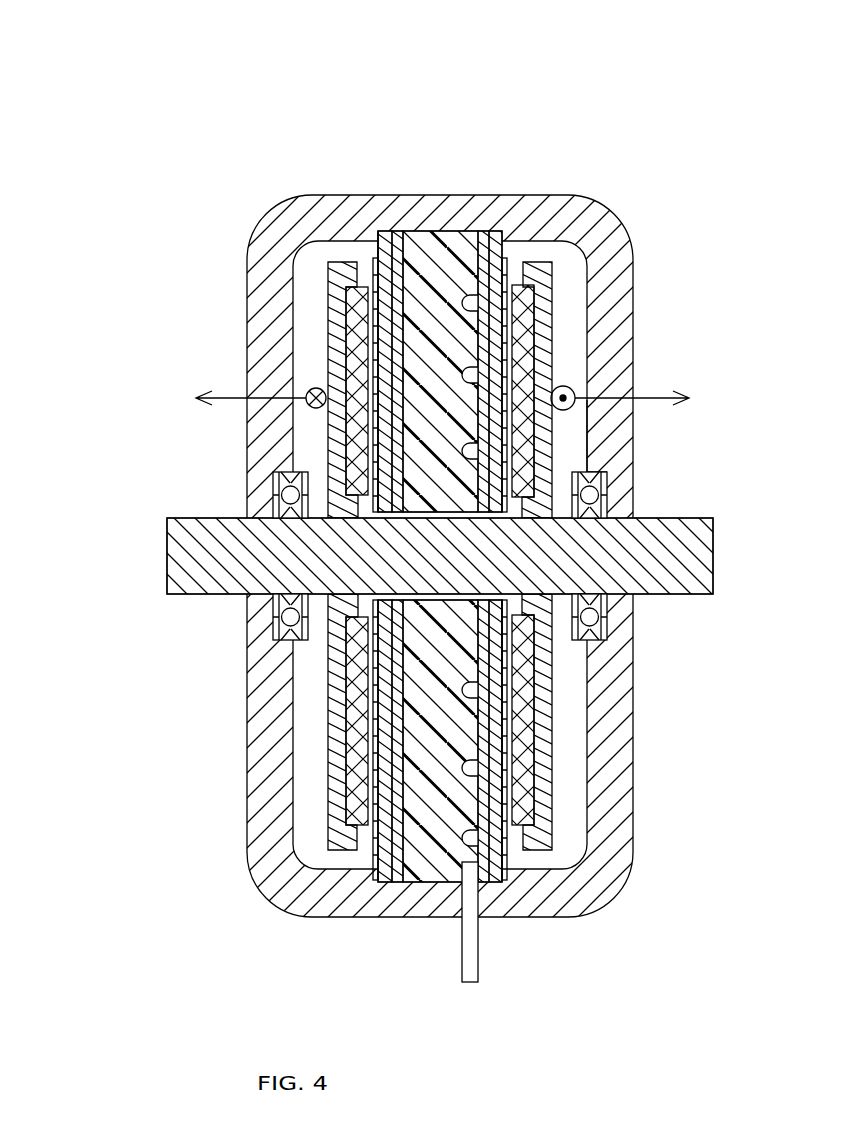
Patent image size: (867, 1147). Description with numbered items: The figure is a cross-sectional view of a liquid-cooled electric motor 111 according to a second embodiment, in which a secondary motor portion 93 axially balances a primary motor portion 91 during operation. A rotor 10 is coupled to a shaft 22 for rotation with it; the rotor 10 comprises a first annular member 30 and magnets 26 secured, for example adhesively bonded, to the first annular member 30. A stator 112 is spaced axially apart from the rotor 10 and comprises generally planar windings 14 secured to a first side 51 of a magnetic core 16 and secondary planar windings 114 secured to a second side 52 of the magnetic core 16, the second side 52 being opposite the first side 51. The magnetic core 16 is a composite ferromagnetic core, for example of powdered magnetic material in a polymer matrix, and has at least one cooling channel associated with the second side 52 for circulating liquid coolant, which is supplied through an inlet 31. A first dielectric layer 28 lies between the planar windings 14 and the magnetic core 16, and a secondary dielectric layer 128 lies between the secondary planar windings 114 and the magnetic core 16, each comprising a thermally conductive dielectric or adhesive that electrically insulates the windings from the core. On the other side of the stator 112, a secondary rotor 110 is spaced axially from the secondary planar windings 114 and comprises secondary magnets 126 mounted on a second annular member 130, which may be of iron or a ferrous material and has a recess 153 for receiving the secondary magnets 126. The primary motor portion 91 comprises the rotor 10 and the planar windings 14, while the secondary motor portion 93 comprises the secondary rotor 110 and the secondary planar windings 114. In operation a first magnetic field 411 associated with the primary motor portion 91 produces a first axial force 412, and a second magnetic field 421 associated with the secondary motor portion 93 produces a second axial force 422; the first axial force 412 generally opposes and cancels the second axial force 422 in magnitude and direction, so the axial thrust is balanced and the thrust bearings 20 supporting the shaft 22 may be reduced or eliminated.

The rotor 10 is at (196, 493).
The planar windings 14 is at (386, 231).
The magnetic core 16 is at (432, 233).
The bearing 20 is at (283, 478).
The shaft 22 is at (676, 518).
The magnets 26 is at (347, 342).
The dielectric layer 28 is at (397, 238).
The first annular member 30 is at (336, 292).
The inlet 31 is at (462, 940).
The first side 51 is at (328, 260).
The second side 52 is at (500, 882).
The primary motor portion 91 is at (196, 493).
The secondary motor portion 93 is at (670, 575).
The secondary rotor 110 is at (664, 575).
The motor 111 is at (424, 537).
The stator 112 is at (437, 537).
The secondary planar windings 114 is at (497, 233).
The secondary magnets 126 is at (544, 272).
The secondary dielectric layer 128 is at (480, 233).
The second annular member 130 is at (539, 262).
The recess 153 is at (555, 442).
The first magnetic field 411 is at (316, 388).
The first axial force 412 is at (228, 398).
The second magnetic field 421 is at (563, 386).
The second axial force 422 is at (650, 398).